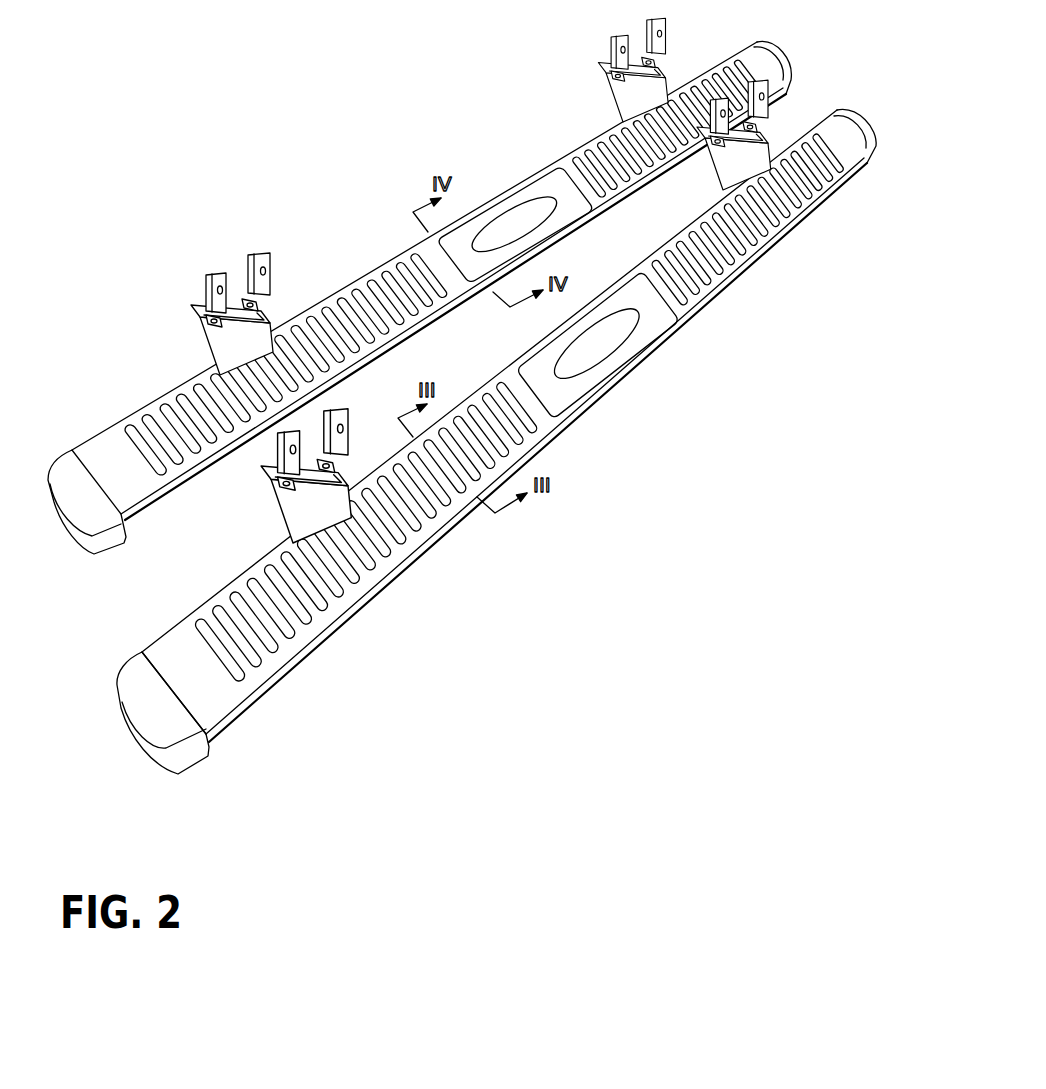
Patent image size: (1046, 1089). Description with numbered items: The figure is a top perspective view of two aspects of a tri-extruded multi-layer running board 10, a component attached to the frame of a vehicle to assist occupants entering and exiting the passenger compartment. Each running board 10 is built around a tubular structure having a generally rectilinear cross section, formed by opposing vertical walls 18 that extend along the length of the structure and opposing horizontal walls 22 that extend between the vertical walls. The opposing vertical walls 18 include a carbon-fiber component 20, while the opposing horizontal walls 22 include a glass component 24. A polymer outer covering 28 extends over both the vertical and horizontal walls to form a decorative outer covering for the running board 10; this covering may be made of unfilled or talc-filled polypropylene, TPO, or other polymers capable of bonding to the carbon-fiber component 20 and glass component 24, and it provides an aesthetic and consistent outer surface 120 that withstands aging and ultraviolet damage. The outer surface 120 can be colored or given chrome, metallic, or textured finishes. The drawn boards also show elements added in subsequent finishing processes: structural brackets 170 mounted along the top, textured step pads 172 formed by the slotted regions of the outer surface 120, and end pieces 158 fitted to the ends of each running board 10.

The running board 10 is at (444, 408).
The opposing vertical walls 18 is at (343, 619).
The carbon-fiber component 20 is at (455, 454).
The opposing horizontal walls 22 is at (177, 655).
The glass component 24 is at (210, 694).
The polymer outer covering 28 is at (763, 246).
The outer surface 120 is at (116, 458).
The end pieces 158 is at (153, 713).
The structural brackets 170 is at (278, 303).
The step pads 172 is at (698, 286).